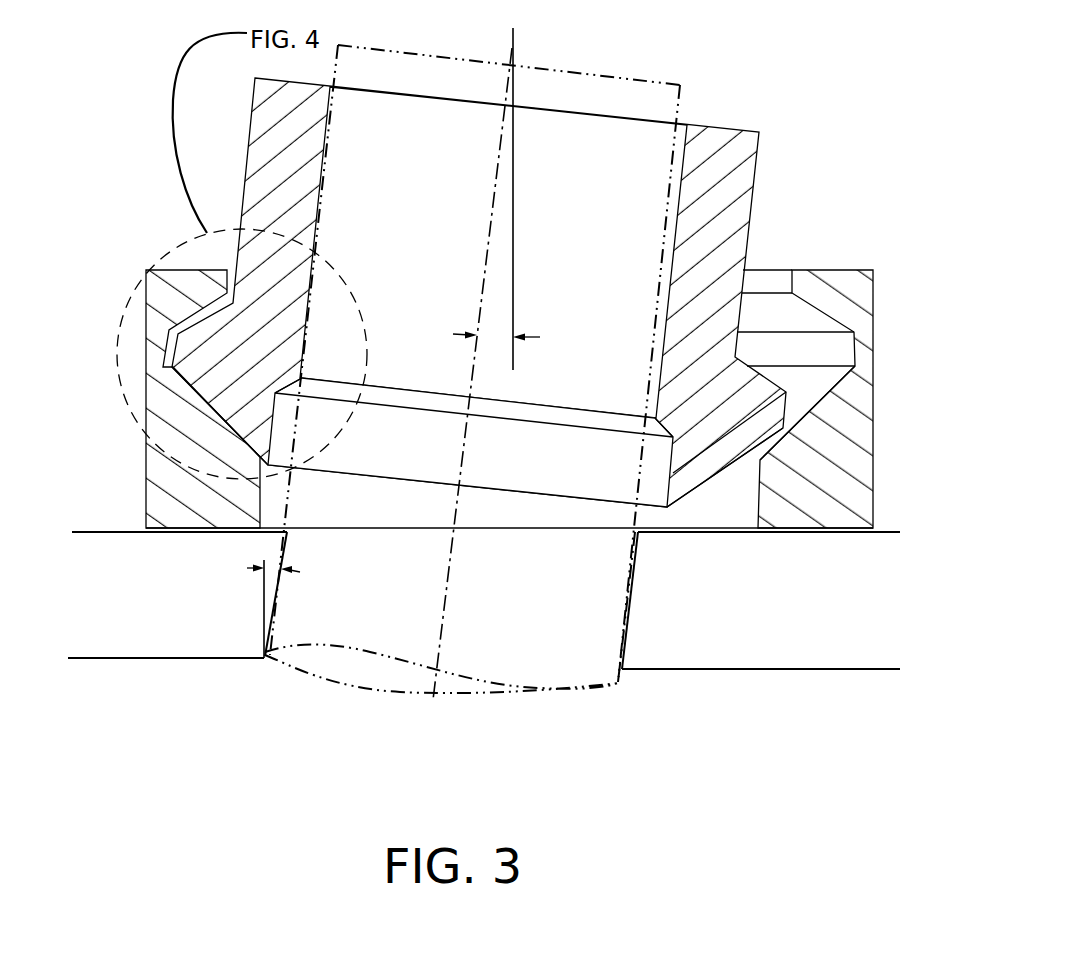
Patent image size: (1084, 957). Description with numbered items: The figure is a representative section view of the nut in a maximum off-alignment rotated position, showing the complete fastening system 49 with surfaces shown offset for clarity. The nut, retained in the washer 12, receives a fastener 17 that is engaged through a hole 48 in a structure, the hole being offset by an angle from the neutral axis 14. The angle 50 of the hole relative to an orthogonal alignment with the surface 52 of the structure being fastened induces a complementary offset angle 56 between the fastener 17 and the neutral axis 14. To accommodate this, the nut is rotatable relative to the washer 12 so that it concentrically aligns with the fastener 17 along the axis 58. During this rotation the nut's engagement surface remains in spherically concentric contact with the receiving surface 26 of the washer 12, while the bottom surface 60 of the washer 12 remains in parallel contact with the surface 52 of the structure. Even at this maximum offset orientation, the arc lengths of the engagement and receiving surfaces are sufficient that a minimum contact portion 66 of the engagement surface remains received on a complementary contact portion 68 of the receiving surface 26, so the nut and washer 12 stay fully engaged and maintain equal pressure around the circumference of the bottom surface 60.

The washer 12 is at (873, 358).
The neutral axis 14 is at (515, 232).
The fastener 17 is at (640, 133).
The receiving surface 26 is at (822, 405).
The hole 48 is at (628, 632).
The fastening system 49 is at (112, 239).
The angle 50 is at (247, 568).
The surface 52 is at (108, 531).
The offset angle 56 is at (537, 335).
The axis 58 is at (443, 628).
The bottom surface 60 is at (785, 531).
The minimum contact portion 66 is at (767, 443).
The complimentary contact portion 68 is at (775, 445).